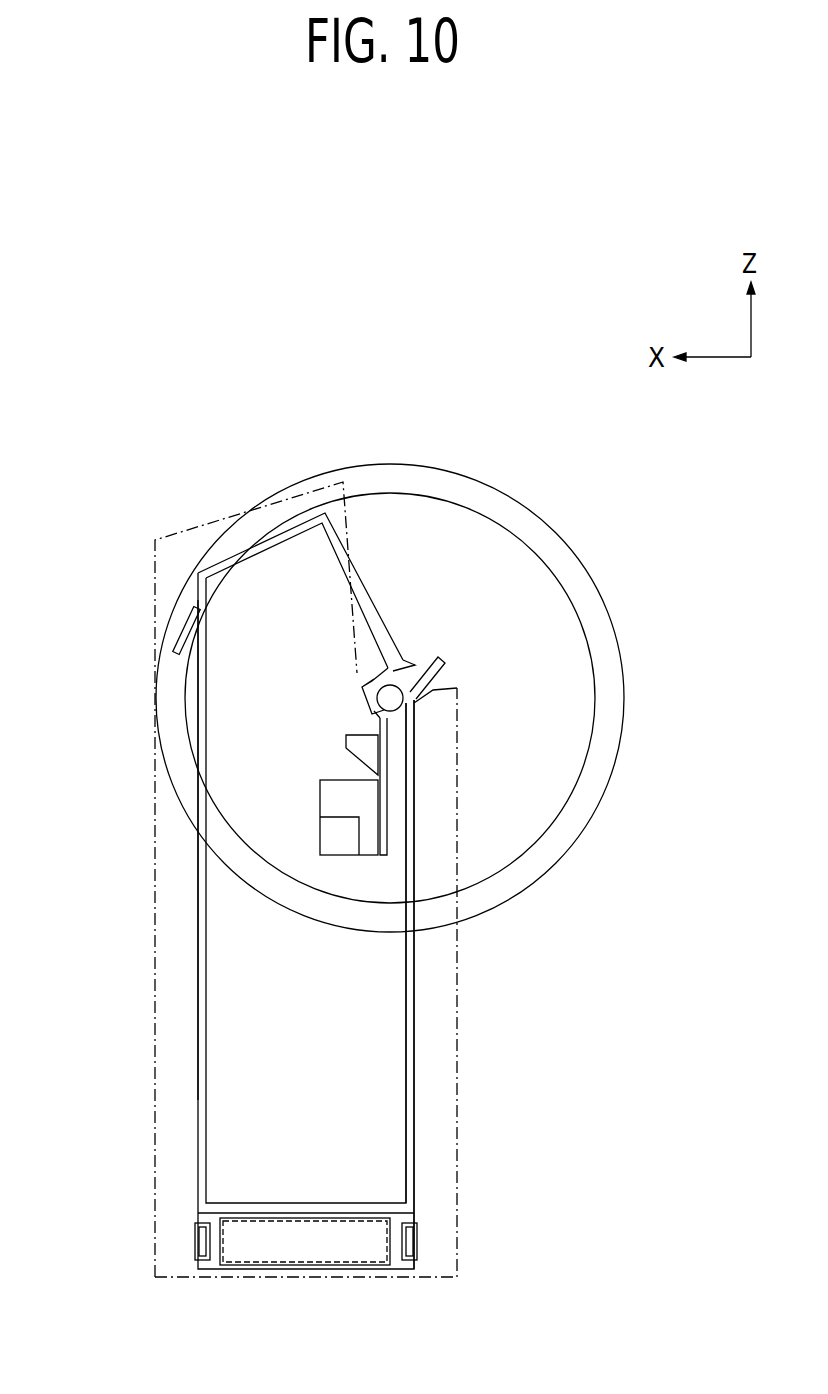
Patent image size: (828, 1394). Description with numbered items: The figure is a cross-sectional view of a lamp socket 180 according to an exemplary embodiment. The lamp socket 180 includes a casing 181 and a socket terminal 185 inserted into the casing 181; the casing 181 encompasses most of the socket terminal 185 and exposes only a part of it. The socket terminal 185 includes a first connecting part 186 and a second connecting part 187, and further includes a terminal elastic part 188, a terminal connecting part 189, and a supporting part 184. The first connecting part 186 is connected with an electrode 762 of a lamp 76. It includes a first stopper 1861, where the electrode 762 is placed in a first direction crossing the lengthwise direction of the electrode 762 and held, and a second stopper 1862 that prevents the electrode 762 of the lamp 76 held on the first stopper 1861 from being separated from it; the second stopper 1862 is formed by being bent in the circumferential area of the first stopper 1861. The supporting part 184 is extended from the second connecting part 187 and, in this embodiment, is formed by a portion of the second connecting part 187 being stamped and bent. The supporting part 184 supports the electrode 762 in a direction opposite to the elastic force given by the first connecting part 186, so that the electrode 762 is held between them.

The lamp 76 is at (583, 552).
The electrode 762 is at (372, 712).
The lamp socket 180 is at (563, 317).
The casing 181 is at (149, 1027).
The supporting part 184 is at (415, 1093).
The socket terminal 185 is at (191, 947).
The first connecting part 186 is at (381, 523).
The first stopper 1861 is at (378, 660).
The second stopper 1862 is at (398, 665).
The second connecting part 187 is at (215, 1277).
The terminal elastic part 188 is at (274, 540).
The terminal connecting part 189 is at (200, 847).